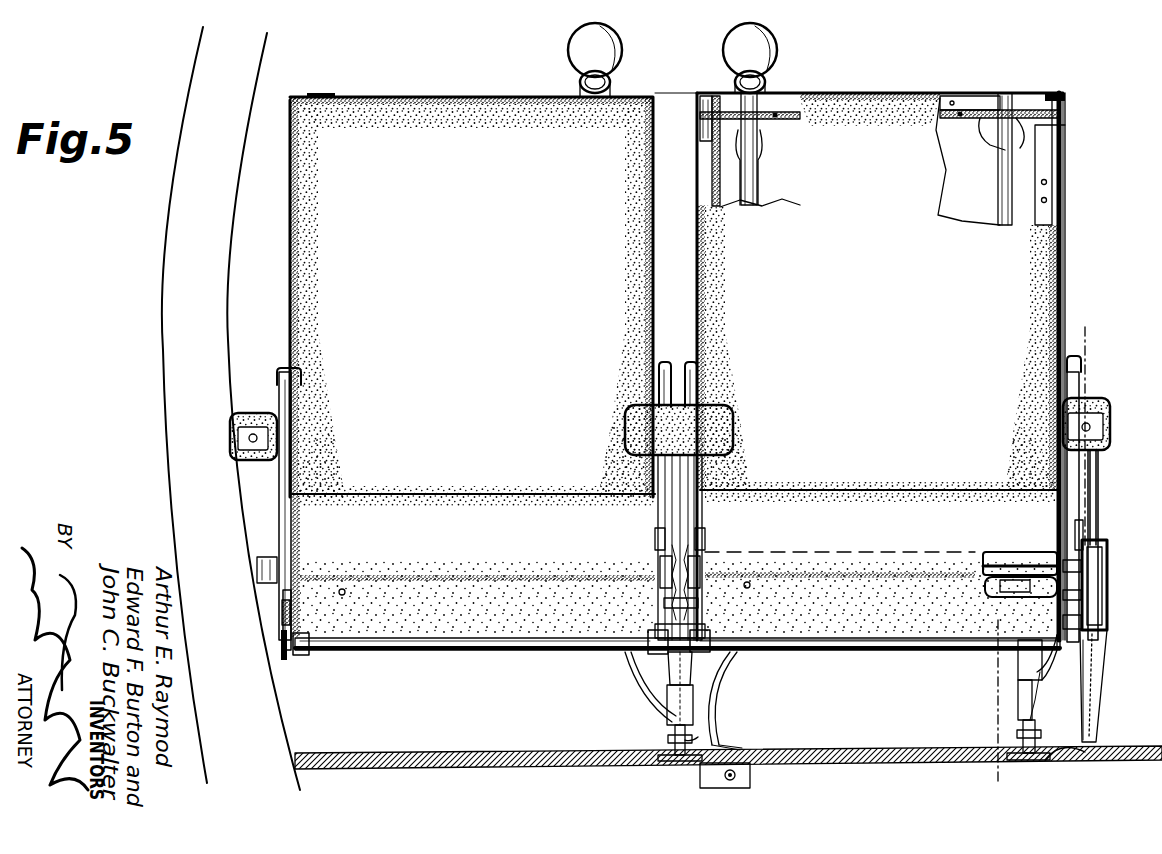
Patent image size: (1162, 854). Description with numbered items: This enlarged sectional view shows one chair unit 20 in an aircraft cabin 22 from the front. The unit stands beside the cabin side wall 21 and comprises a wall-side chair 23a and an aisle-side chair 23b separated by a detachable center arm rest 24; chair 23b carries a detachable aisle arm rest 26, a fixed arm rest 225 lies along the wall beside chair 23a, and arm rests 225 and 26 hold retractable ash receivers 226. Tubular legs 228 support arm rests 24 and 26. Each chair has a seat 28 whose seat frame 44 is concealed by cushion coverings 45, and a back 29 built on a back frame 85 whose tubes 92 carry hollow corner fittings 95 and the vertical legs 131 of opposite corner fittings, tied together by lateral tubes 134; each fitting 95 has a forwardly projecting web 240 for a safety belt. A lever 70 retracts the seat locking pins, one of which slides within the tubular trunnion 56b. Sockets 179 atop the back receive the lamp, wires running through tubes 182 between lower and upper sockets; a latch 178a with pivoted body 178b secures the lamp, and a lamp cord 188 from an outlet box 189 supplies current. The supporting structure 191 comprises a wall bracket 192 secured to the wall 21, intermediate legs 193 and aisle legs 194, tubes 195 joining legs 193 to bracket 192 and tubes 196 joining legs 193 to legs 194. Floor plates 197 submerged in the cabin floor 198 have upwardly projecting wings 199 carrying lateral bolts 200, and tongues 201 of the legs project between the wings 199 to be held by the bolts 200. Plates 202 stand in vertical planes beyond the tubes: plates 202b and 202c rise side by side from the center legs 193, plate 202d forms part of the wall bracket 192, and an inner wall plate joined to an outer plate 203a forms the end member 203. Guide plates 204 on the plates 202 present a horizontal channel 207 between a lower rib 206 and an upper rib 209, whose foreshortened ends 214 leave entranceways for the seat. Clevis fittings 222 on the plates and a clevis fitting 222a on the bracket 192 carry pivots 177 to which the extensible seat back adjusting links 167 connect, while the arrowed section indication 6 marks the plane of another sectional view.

The chair unit 20 is at (673, 118).
The side wall 21 is at (190, 370).
The aircraft cabin 22 is at (262, 248).
The chair 23a is at (471, 295).
The chair 23b is at (881, 366).
The center arm rest 24 is at (720, 413).
The aisle arm rest 26 is at (1096, 410).
The seat 28 is at (425, 505).
The back 29 is at (433, 127).
The seat frame 44 is at (1000, 560).
The cushion coverings 45 is at (513, 521).
The tubular trunnion 56b is at (1100, 560).
The lever 70 is at (344, 589).
The back frame 85 is at (1066, 163).
The tubes 92 is at (714, 186).
The corner fitting 95 is at (1064, 94).
The vertical legs 131 is at (714, 130).
The lateral tubes 134 is at (945, 100).
The seat back adjusting link 167 is at (301, 395).
The pivot 177 is at (704, 553).
The latch 178a is at (588, 44).
The latch body 178b is at (764, 52).
The socket 179 is at (763, 105).
The tubes 182 is at (758, 186).
The lamp cord 188 is at (640, 678).
The outlet box 189 is at (750, 778).
The supporting structure 191 is at (550, 656).
The wall bracket 192 is at (280, 620).
The intermediate legs 193 is at (672, 696).
The aisle legs 194 is at (1027, 699).
The tubes 195 is at (445, 651).
The tubes 196 is at (884, 641).
The floor plates 197 is at (692, 762).
The cabin floor 198 is at (827, 753).
The wings 199 is at (698, 738).
The lateral bolts 200 is at (668, 740).
The tongues 201 is at (698, 717).
The plates 202 is at (1082, 622).
The plate 202b is at (712, 572).
The plate 202c is at (657, 568).
The plate 202d is at (281, 610).
The end member 203 is at (1106, 658).
The outer plate 203a is at (1094, 680).
The guide plates 204 is at (279, 639).
The lower horizontal rib 206 is at (716, 681).
The horizontal channel 207 is at (703, 619).
The upper rib 209 is at (703, 600).
The foreshortened rib ends 214 is at (1080, 600).
The clevis fittings 222 is at (657, 550).
The clevis fitting 222a is at (277, 567).
The arm rest 225 is at (250, 414).
The ash receivers 226 is at (268, 443).
The tubular legs 228 is at (690, 476).
The web 240 is at (1064, 118).
The section line 6- 6 is at (1085, 327).